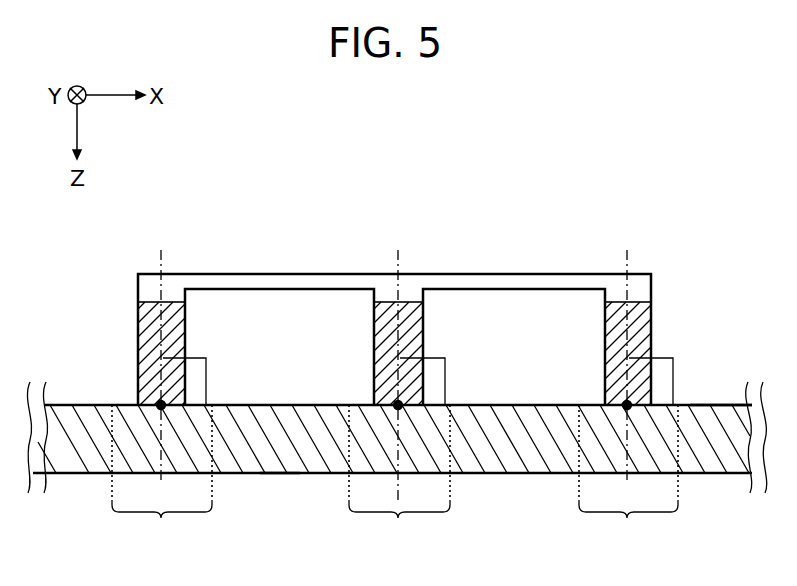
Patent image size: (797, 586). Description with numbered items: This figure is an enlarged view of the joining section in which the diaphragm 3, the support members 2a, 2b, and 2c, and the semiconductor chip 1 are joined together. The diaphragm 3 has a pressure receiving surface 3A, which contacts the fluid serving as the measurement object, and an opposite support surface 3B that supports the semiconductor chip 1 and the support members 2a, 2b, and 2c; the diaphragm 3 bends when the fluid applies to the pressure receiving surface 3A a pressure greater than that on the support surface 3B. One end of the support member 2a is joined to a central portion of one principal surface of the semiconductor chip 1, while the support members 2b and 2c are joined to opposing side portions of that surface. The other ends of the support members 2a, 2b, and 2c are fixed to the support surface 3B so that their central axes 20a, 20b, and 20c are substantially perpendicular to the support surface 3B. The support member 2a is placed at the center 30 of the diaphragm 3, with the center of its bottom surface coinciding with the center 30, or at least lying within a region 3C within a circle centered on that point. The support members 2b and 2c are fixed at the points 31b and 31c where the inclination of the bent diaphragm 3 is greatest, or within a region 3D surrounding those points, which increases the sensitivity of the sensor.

The semiconductor chip 1 is at (651, 274).
The support member 2a is at (423, 320).
The support member 2b is at (185, 318).
The support member 2c is at (651, 320).
The diaphragm 3 is at (80, 462).
The pressure receiving surface 3A is at (282, 476).
The support surface 3B is at (702, 405).
The region 3C is at (399, 479).
The region 3D is at (395, 479).
The central axis 20a is at (398, 363).
The central axis 20b is at (160, 353).
The central axis 20c is at (627, 353).
The center of the diaphragm 30 is at (395, 402).
The point 31b is at (158, 402).
The point 31c is at (624, 402).